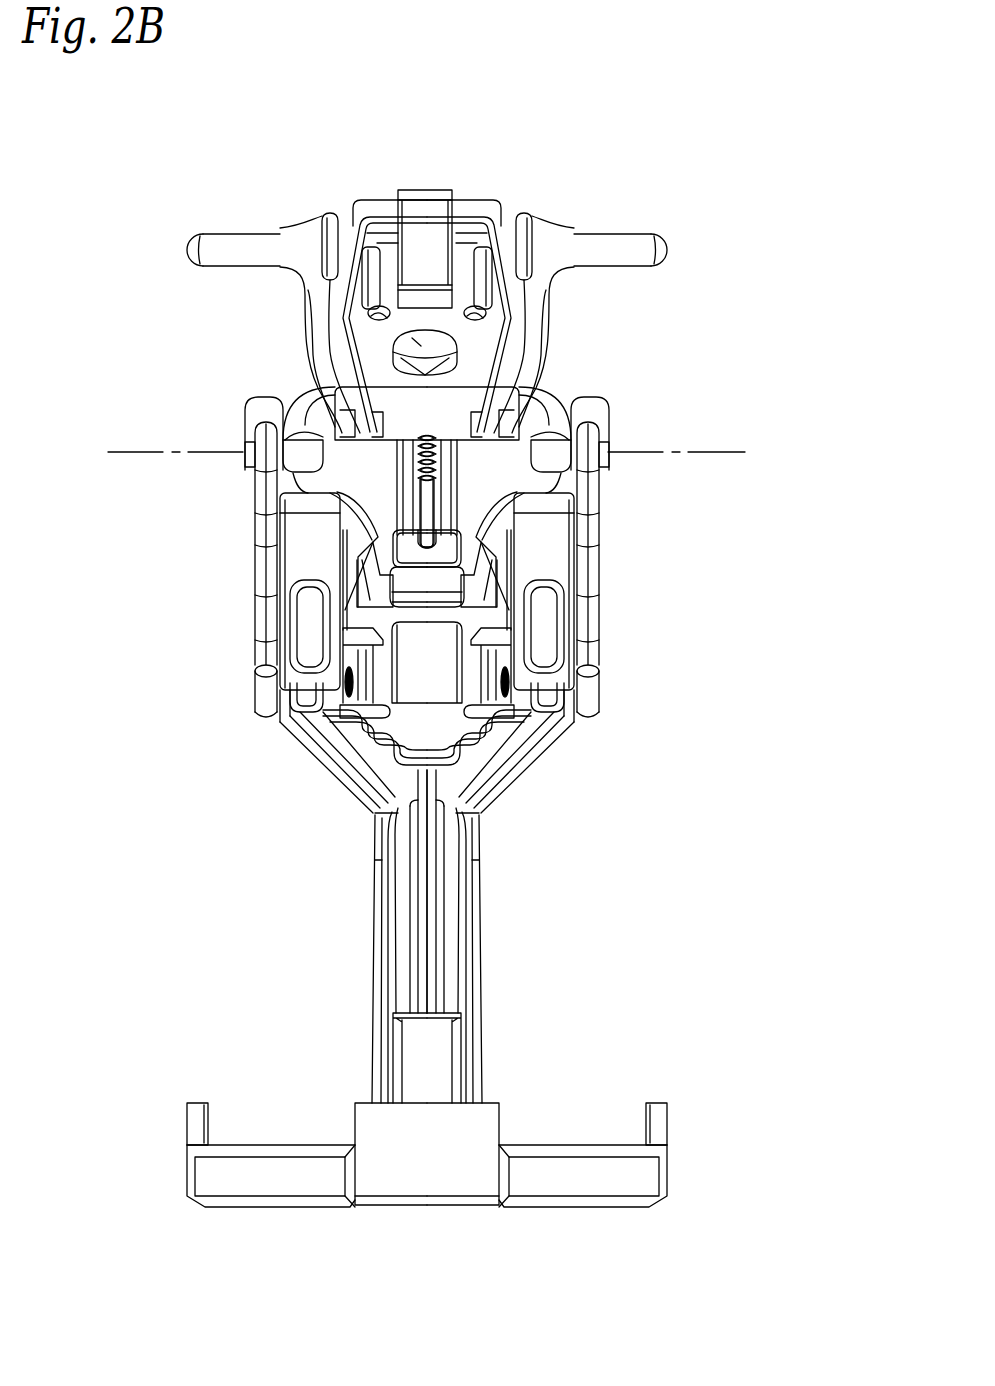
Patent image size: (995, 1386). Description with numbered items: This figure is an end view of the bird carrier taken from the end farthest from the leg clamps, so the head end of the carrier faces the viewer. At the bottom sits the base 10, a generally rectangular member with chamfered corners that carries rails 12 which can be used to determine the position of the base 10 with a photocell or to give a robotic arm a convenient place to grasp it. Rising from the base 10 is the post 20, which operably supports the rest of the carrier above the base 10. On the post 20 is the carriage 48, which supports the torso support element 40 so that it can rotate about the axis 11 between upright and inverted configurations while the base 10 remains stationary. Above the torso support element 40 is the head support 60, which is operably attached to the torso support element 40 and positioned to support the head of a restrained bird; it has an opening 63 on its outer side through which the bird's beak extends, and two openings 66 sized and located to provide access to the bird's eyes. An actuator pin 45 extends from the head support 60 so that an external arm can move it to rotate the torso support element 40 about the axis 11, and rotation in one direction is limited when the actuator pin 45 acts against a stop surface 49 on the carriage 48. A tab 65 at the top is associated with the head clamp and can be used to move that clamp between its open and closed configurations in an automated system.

The base 10 is at (550, 1143).
The axis 11 is at (702, 452).
The rails 12 is at (198, 1103).
The post 20 is at (488, 938).
The torso support element 40 is at (545, 470).
The actuator pin 45 is at (227, 235).
The carriage 48 is at (255, 530).
The stop surface 49 is at (258, 693).
The head support 60 is at (566, 320).
The opening 63 is at (453, 357).
The tab 65 is at (426, 190).
The openings 66 is at (368, 318).